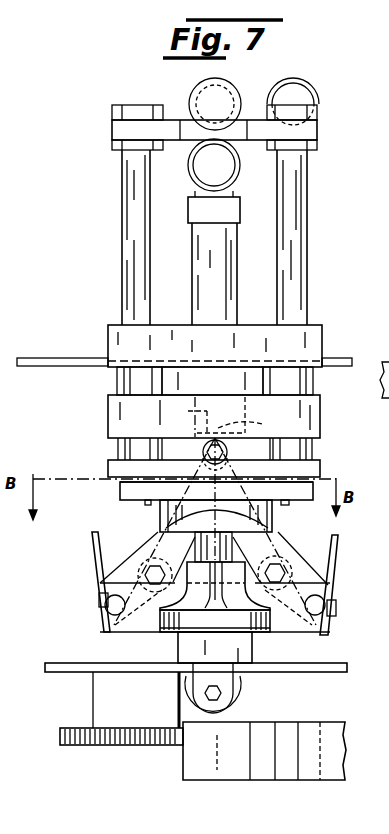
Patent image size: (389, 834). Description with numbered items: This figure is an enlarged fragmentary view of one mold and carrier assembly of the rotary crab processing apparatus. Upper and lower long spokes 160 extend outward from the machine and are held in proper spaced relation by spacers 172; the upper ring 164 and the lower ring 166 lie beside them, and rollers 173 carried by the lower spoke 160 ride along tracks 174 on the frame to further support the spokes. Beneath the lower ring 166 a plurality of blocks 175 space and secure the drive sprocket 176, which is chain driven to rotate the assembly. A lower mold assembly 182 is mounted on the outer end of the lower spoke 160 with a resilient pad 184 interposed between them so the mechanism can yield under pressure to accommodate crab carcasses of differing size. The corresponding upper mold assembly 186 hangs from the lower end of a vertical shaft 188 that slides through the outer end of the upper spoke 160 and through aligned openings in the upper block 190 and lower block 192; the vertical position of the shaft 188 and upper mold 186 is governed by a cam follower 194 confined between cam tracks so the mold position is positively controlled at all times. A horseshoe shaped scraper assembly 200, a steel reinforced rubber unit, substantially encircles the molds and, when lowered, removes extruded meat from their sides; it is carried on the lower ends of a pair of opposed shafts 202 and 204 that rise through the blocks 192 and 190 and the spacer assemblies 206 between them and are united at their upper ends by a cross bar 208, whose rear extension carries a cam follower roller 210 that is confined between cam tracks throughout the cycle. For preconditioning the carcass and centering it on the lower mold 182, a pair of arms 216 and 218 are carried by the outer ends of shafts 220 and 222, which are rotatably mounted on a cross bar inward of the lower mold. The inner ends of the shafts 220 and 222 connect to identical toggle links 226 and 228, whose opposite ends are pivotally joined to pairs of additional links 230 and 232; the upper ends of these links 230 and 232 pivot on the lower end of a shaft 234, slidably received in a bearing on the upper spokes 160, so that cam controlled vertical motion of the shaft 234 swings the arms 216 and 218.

The long spokes 160 is at (262, 378).
The upper ring 164 is at (343, 358).
The lower ring 166 is at (297, 668).
The spacers 172 is at (163, 545).
The rollers 173 is at (243, 690).
The tracks 174 is at (287, 782).
The blocks 175 is at (98, 700).
The drive sprocket 176 is at (108, 736).
The lower mold assembly 182 is at (272, 620).
The resilient pad 184 is at (190, 643).
The upper mold assembly 186 is at (300, 504).
The vertical shaft 188 is at (214, 258).
The upper block 190 is at (113, 342).
The lower block 192 is at (112, 414).
The cam follower 194 is at (200, 173).
The scraper assembly 200 is at (120, 495).
The shaft 202 is at (122, 262).
The shaft 204 is at (300, 452).
The spacer assemblies 206 is at (118, 386).
The cross bar 208 is at (176, 120).
The cam follower roller 210 is at (284, 86).
The arm 216 is at (92, 550).
The arm 218 is at (336, 546).
The shaft 220 is at (114, 606).
The shaft 222 is at (318, 605).
The toggle link 226 is at (97, 577).
The toggle link 228 is at (331, 581).
The links 230 is at (155, 551).
The links 232 is at (262, 548).
The shaft 234 is at (245, 417).